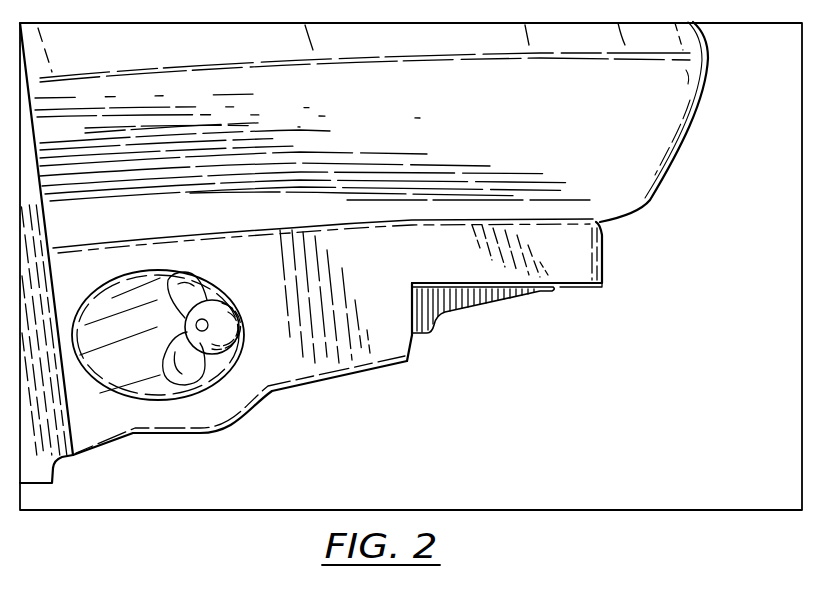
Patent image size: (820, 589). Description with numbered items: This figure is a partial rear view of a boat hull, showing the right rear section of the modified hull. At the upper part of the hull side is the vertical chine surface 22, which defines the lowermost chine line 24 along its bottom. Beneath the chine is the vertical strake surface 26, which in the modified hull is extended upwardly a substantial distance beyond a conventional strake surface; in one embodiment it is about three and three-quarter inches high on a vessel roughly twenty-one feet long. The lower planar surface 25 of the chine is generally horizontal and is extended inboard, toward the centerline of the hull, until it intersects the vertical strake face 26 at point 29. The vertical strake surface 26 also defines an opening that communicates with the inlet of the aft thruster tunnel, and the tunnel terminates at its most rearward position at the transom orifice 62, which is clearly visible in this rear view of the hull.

The vertical chine surface 22 is at (605, 247).
The lowermost chine line 24 is at (603, 287).
The lower planar surface of the chine 25 is at (570, 289).
The vertical strake surface 26 is at (413, 347).
The intersection point 29 is at (413, 285).
The transom orifice 62 is at (157, 403).